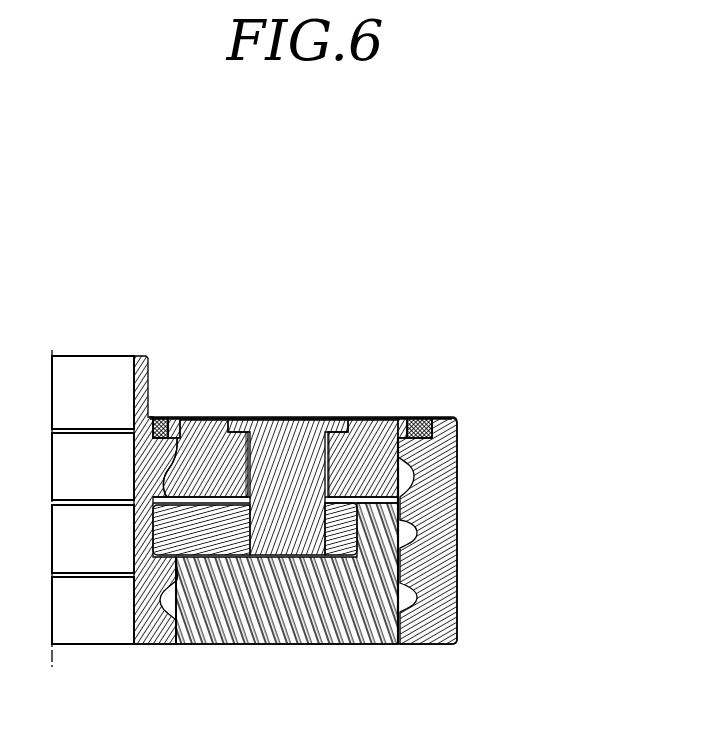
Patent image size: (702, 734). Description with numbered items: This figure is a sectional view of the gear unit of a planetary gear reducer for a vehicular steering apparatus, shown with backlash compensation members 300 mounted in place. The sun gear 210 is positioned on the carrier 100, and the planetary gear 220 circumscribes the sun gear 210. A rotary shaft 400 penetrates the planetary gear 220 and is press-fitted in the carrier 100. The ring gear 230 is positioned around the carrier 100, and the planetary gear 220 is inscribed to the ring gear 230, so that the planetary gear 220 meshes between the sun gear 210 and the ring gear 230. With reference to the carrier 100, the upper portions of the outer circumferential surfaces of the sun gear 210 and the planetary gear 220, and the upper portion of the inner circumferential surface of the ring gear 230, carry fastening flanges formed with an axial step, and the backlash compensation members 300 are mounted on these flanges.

The carrier 100 is at (243, 574).
The sun gear 210 is at (140, 348).
The planetary gear 220 is at (277, 382).
The ring gear 230 is at (489, 456).
The backlash compensation member 300 is at (168, 417).
The rotary shaft 400 is at (294, 442).